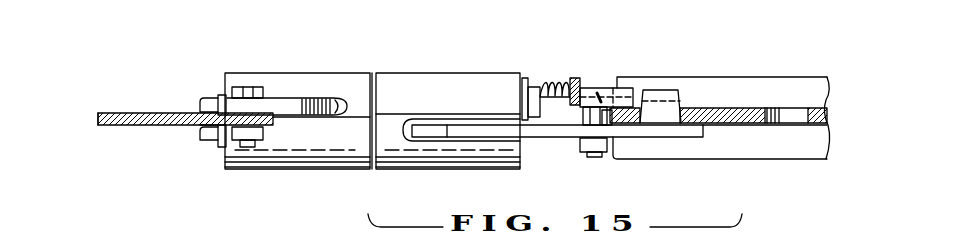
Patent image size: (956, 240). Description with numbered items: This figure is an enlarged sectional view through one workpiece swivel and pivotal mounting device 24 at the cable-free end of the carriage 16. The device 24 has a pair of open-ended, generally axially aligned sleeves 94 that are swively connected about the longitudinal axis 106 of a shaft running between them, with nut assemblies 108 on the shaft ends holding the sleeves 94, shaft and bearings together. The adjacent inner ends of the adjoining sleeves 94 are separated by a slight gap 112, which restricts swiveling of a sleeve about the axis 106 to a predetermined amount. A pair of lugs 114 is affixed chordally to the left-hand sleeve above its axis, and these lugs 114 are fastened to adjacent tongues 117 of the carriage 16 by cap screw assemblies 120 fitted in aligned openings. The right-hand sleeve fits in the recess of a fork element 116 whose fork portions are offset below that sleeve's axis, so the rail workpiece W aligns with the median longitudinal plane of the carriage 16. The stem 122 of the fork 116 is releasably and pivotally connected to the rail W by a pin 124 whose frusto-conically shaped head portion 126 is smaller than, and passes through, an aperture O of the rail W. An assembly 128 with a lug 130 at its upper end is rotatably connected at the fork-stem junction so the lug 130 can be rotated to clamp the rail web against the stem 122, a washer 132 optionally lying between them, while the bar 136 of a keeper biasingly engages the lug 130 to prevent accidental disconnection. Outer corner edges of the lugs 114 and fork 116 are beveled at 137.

The workpiece swivel and pivotal mounting device 24 is at (357, 50).
The carriage 16 is at (152, 113).
The sleeve 94 is at (314, 86).
The longitudinal axis 106 is at (88, 118).
The nut assembly 108 is at (200, 102).
The gap 112 is at (364, 149).
The lug 114 is at (257, 108).
The fork element 116 is at (483, 128).
The tongue 117 is at (202, 127).
The cap screw assembly 120 is at (246, 79).
The stem 122 is at (669, 131).
The pin 124 is at (668, 100).
The frusto-conically shaped head portion 126 is at (660, 96).
The assembly 128 is at (609, 92).
The lug 130 is at (628, 93).
The washer 132 is at (595, 113).
The bar 136 is at (576, 79).
The beveled corner edge 137 is at (432, 128).
The rail workpiece W is at (750, 83).
The aperture O is at (795, 112).